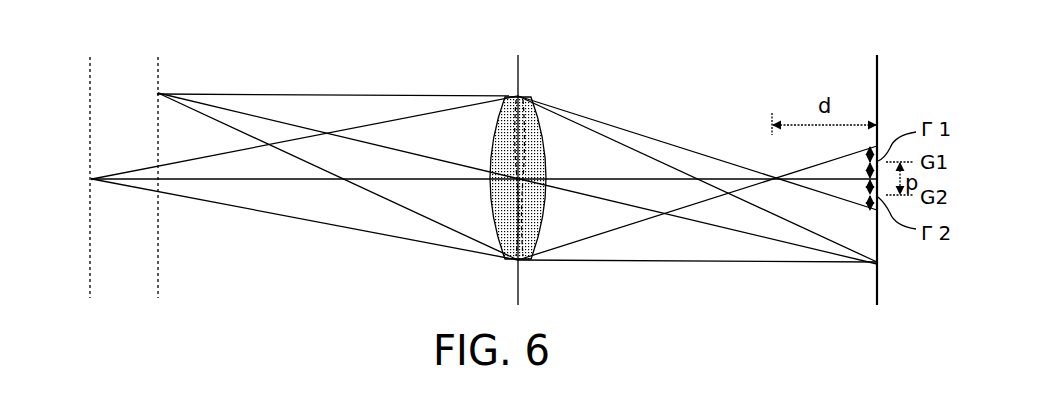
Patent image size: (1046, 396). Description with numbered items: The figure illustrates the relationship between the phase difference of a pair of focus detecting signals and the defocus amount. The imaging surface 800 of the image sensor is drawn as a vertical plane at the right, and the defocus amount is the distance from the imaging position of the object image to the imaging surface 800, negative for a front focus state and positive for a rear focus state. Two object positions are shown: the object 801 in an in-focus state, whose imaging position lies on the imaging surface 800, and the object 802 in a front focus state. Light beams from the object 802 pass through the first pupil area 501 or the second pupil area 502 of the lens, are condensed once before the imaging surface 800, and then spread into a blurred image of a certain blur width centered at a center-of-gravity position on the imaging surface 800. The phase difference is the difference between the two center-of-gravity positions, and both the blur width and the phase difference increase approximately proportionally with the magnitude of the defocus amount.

The imaging surface 800 is at (882, 167).
The object 801 is at (135, 177).
The object 802 is at (68, 177).
The first pupil area 501 is at (537, 237).
The second pupil area 502 is at (523, 128).